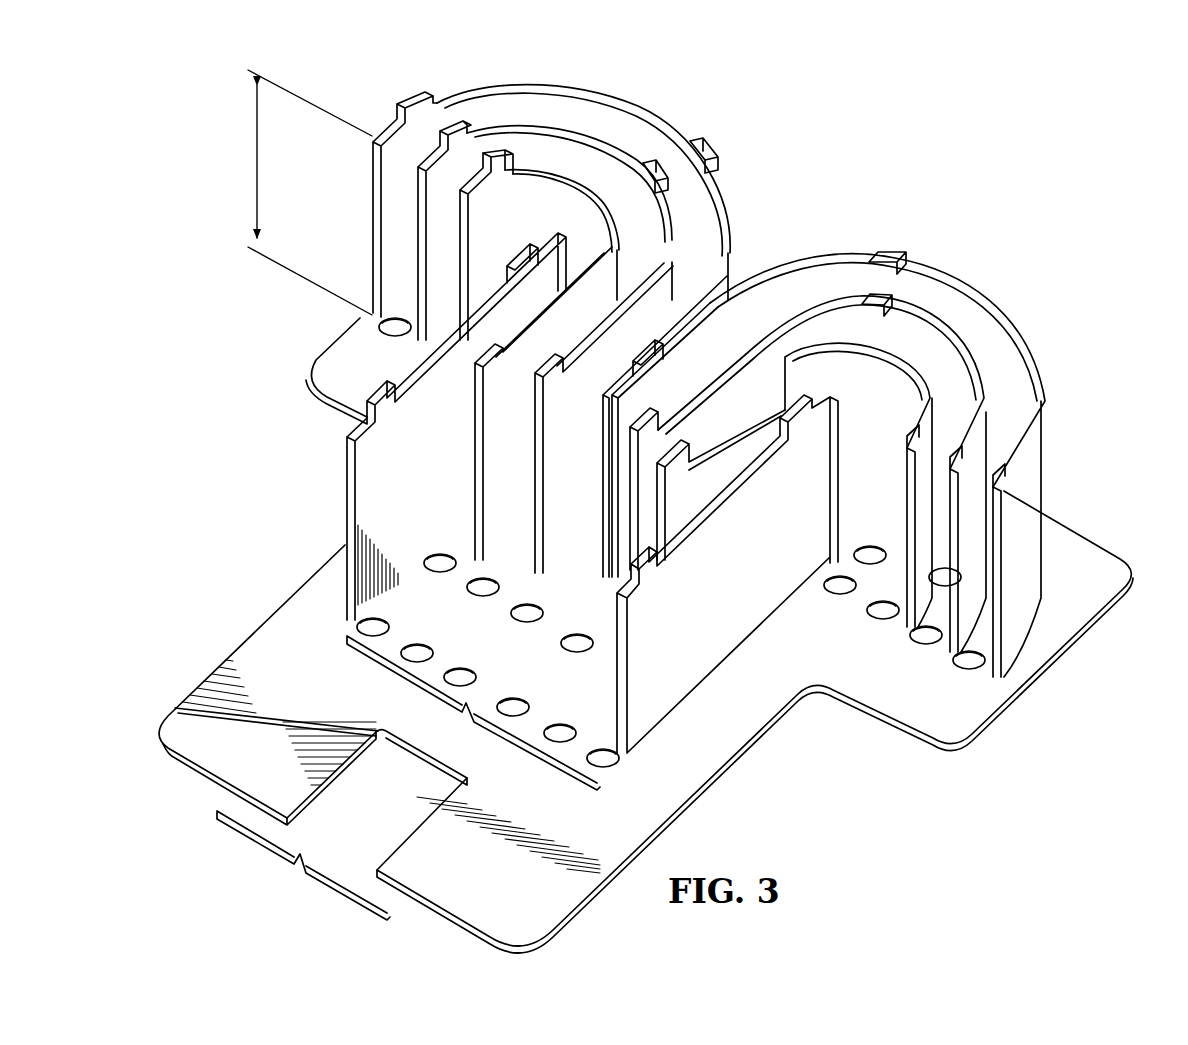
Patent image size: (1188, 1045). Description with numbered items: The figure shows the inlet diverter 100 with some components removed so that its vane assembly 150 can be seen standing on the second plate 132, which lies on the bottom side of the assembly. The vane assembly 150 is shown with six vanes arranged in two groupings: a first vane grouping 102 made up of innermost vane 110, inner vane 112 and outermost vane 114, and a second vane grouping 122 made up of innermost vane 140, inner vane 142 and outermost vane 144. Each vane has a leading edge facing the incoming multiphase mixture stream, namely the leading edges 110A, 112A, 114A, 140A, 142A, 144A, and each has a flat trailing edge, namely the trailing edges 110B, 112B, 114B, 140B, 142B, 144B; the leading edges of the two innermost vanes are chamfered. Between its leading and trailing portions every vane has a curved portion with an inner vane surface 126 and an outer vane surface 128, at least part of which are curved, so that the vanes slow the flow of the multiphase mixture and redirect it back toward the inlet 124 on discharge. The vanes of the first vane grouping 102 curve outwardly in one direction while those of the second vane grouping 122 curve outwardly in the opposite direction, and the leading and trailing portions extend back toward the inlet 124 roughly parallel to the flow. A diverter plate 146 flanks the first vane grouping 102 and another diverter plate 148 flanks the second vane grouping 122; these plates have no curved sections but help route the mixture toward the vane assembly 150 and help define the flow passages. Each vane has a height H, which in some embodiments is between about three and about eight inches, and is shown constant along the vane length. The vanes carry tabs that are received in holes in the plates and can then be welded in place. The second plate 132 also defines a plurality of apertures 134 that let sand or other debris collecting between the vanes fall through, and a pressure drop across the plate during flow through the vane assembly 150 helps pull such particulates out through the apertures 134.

The inlet diverter 100 is at (947, 160).
The first vane grouping 102 is at (1028, 318).
The innermost vane 110 is at (875, 425).
The leading edge 110A is at (668, 487).
The trailing edge 110B is at (885, 628).
The inner vane 112 is at (930, 357).
The leading edge 112A is at (640, 505).
The trailing edge 112B is at (940, 655).
The outermost vane 114 is at (1041, 497).
The leading edge 114A is at (640, 585).
The trailing edge 114B is at (965, 680).
The second vane grouping 122 is at (668, 100).
The inlet 124 is at (408, 778).
The inner vane surface 126 is at (555, 197).
The outer vane surface 128 is at (728, 272).
The second plate 132 is at (1090, 538).
The apertures 134 is at (507, 695).
The innermost vane 140 is at (487, 223).
The leading edge 140A is at (477, 437).
The trailing edge 140B is at (463, 277).
The inner vane 142 is at (673, 213).
The leading edge 142A is at (540, 490).
The trailing edge 142B is at (422, 210).
The outermost vane 144 is at (478, 93).
The leading edge 144A is at (603, 490).
The trailing edge 144B is at (377, 163).
The diverter plate 146 is at (667, 693).
The diverter plate 148 is at (347, 483).
The vane assembly 150 is at (383, 88).